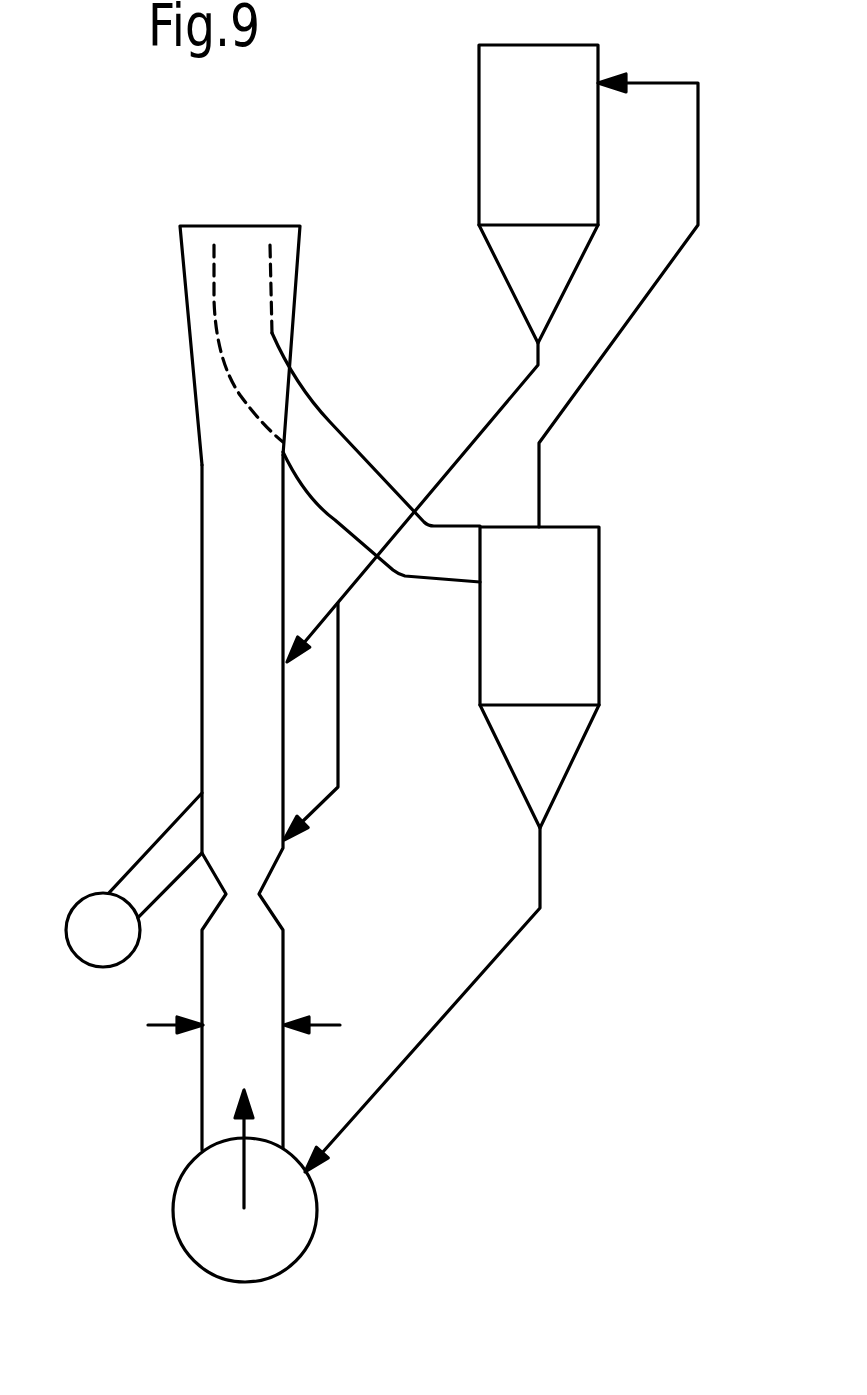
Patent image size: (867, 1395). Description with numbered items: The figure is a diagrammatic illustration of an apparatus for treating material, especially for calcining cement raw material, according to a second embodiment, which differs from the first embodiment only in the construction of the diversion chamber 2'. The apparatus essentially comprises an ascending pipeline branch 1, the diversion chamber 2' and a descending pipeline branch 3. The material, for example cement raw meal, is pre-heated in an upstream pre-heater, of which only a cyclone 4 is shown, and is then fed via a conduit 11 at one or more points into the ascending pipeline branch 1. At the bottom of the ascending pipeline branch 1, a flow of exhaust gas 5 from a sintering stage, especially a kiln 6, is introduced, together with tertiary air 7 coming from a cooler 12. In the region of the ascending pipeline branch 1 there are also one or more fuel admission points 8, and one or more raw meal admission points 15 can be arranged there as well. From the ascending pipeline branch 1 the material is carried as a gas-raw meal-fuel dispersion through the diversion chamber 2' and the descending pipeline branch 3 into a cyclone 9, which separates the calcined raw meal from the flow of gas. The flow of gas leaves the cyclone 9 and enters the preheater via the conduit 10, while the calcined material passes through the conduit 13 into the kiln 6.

The ascending pipeline branch 1 is at (212, 482).
The diversion chamber 2' is at (231, 307).
The descending pipeline branch 3 is at (312, 420).
The cyclone 4 is at (490, 138).
The flow of exhaust gas 5 is at (244, 1160).
The kiln 6 is at (303, 1223).
The tertiary air 7 is at (163, 852).
The fuel admission point 8 is at (323, 1025).
The cyclone 9 is at (583, 583).
The conduit 10 is at (635, 313).
The conduit 11 is at (352, 587).
The cooler 12 is at (77, 952).
The conduit 13 is at (408, 1058).
The raw meal admission point 15 is at (163, 1026).